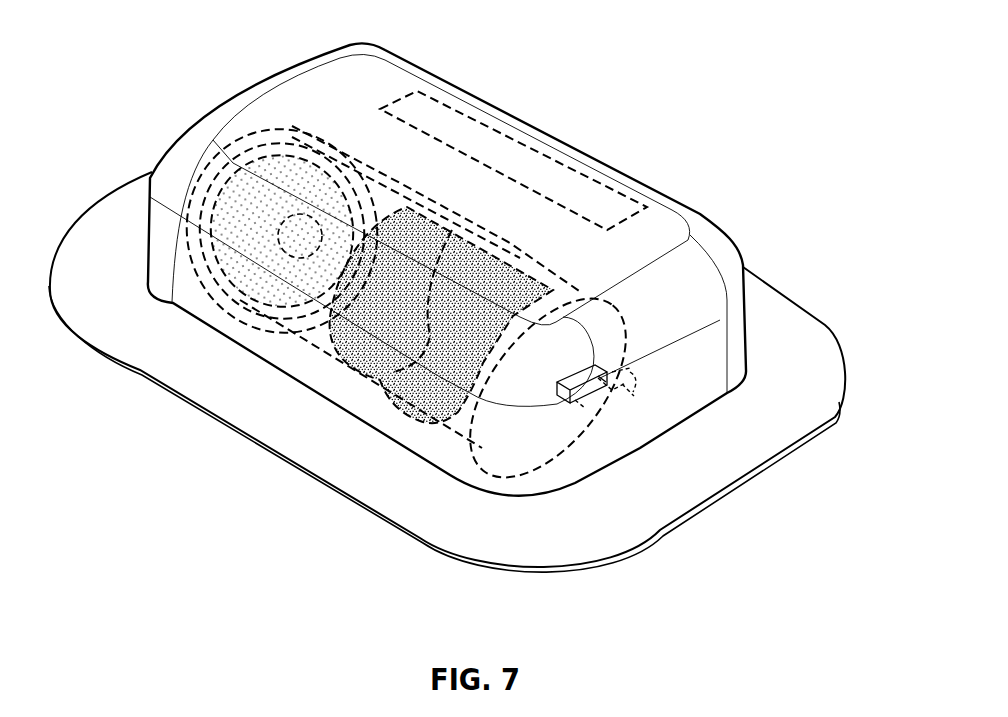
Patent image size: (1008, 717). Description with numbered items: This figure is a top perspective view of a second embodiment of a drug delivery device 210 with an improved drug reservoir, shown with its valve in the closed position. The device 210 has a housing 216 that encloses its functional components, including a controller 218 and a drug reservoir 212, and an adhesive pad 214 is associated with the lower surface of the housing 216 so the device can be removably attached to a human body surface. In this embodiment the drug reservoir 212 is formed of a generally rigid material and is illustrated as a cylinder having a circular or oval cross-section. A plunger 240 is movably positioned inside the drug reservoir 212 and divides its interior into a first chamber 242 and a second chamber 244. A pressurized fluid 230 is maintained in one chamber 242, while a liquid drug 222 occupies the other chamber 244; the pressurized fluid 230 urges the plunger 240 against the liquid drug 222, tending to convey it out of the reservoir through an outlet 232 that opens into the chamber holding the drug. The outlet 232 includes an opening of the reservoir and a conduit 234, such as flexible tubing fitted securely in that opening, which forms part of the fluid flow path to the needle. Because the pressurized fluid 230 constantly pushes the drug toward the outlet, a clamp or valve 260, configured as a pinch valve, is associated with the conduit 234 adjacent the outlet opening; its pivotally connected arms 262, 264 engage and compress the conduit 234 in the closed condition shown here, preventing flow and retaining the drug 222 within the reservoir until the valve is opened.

The drug delivery device 210 is at (463, 326).
The drug reservoir 212 is at (382, 400).
The adhesive pad 214 is at (833, 338).
The housing 216 is at (670, 197).
The controller 218 is at (478, 122).
The liquid drug 222 is at (490, 315).
The pressurized fluid 230 is at (301, 213).
The outlet 232 is at (605, 397).
The conduit 234 is at (630, 426).
The plunger 240 is at (376, 210).
The first chamber 242 is at (280, 327).
The second chamber 244 is at (425, 430).
The clamp or valve 260 is at (635, 392).
The arm 262 is at (603, 380).
The arm 264 is at (565, 412).